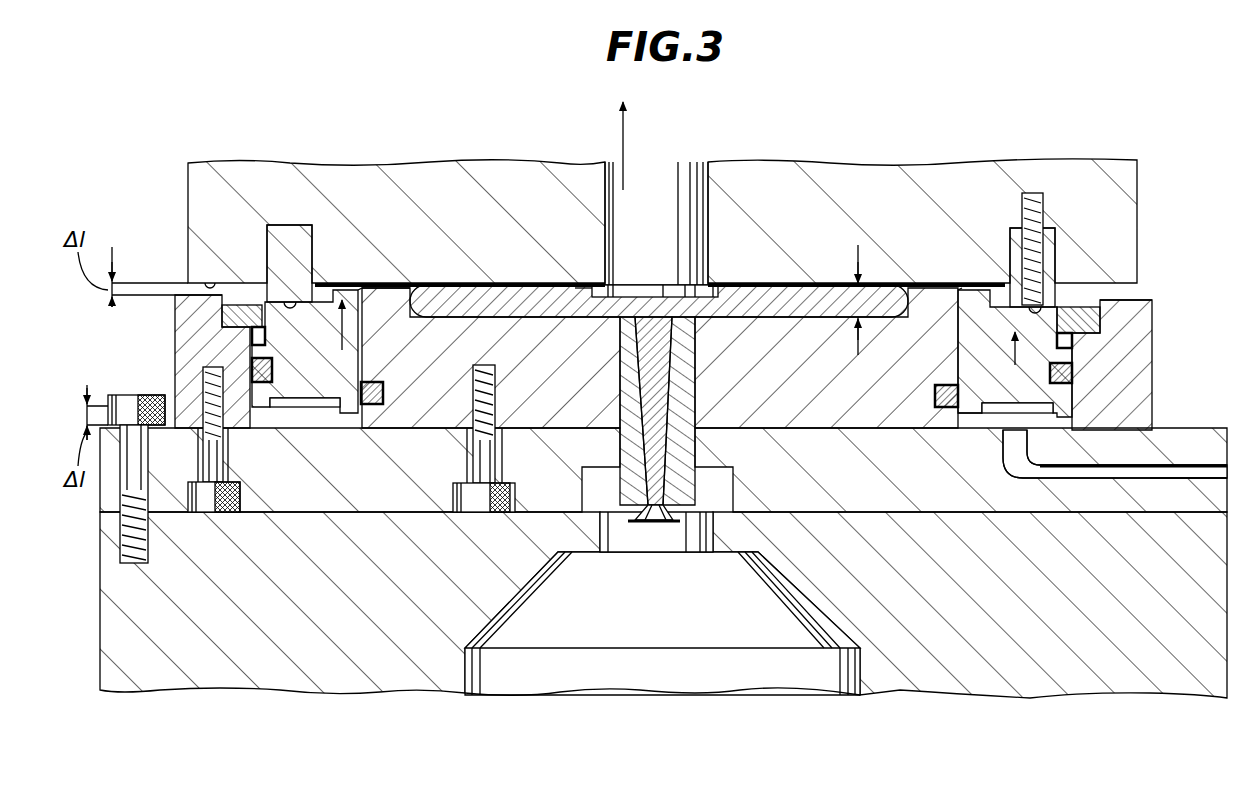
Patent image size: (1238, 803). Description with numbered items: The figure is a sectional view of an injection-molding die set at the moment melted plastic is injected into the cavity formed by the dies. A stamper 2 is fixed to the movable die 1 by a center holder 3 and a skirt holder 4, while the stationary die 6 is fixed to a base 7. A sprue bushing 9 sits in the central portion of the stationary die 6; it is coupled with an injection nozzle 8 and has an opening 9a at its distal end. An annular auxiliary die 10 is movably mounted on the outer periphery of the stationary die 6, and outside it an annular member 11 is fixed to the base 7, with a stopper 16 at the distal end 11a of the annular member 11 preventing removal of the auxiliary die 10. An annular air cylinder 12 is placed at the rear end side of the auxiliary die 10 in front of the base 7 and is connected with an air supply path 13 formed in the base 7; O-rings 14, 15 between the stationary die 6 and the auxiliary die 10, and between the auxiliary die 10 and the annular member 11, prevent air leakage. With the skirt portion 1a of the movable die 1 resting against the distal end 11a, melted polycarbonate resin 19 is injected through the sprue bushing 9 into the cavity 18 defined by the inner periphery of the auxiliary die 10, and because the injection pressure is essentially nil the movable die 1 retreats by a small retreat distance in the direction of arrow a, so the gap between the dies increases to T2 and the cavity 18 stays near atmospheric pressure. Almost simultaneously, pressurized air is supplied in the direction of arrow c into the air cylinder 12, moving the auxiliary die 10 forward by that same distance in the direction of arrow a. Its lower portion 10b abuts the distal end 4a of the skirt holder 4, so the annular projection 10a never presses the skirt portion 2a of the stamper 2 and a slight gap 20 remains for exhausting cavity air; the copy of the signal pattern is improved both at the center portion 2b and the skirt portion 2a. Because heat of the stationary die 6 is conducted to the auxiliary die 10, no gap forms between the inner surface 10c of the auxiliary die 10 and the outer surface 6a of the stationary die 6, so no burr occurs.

The movable die 1 is at (1138, 158).
The skirt portion of the movable die 1a is at (208, 283).
The stamper 2 is at (460, 282).
The skirt portion of the stamper 2a is at (337, 283).
The center portion of the stamper 2b is at (588, 285).
The center holder 3 is at (715, 288).
The skirt holder 4 is at (314, 240).
The distal end of the skirt holder 4a is at (290, 304).
The stationary die 6 is at (532, 328).
The outer surface of the stationary die 6a is at (962, 430).
The base 7 is at (550, 462).
The injection nozzle 8 is at (648, 678).
The sprue bushing 9 is at (610, 488).
The opening of the sprue bushing 9a is at (628, 312).
The auxiliary die 10 is at (313, 362).
The annular projection 10a is at (372, 330).
The lower portion of the auxiliary die's distal end 10b is at (1048, 300).
The inner surface of the auxiliary die 10c is at (985, 414).
The annular member 11 is at (182, 315).
The distal end of the annular member 11a is at (178, 296).
The annular air cylinder 12 is at (290, 422).
The air supply path 13 is at (1163, 472).
The O-ring 14 is at (372, 408).
The O-ring 15 is at (263, 384).
The stopper 16 is at (1097, 327).
The cavity 18 is at (445, 280).
The melted polycarbonate resin 19 is at (762, 292).
The gap 20 is at (343, 335).
The arrow a is at (335, 322).
The arrow c is at (1060, 470).
The gap T2 is at (856, 290).